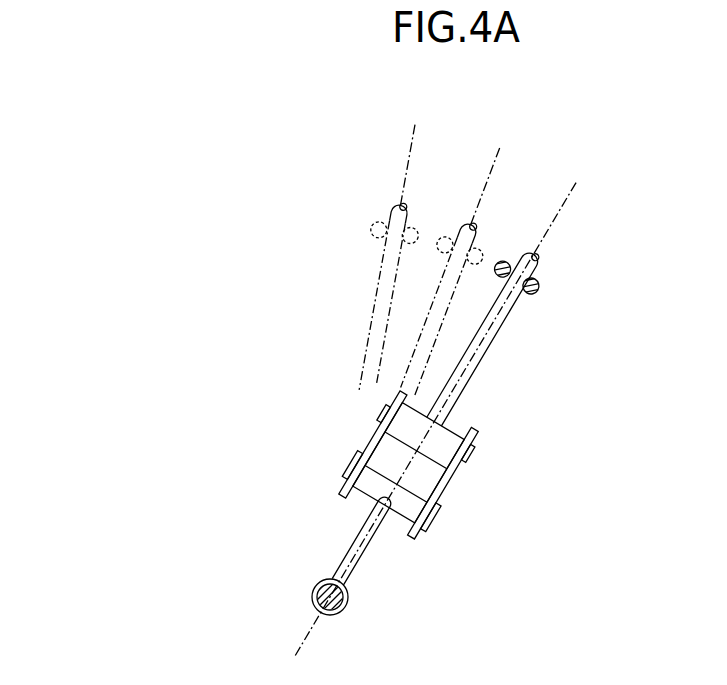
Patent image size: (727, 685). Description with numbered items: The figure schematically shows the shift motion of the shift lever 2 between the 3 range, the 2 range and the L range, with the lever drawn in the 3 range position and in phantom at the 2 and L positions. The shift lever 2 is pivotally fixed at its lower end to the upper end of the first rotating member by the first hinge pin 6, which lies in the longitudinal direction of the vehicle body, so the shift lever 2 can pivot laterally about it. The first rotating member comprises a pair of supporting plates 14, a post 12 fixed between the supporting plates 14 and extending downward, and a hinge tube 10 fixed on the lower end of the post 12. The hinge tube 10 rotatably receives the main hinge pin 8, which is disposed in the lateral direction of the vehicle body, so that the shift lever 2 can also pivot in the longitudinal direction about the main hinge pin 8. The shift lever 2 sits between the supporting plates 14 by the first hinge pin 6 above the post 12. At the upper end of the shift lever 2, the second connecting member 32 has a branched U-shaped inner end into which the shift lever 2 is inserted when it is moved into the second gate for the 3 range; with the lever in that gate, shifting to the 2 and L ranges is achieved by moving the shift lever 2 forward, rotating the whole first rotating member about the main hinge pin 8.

The L range L is at (390, 239).
The shift lever 2 is at (462, 270).
The 3 range 3 is at (459, 385).
The second connecting member 32 is at (538, 274).
The first hinge pin 6 is at (419, 463).
The supporting plates 14 is at (458, 521).
The post 12 is at (367, 547).
The hinge tube 10 is at (352, 612).
The main hinge pin 8 is at (323, 580).